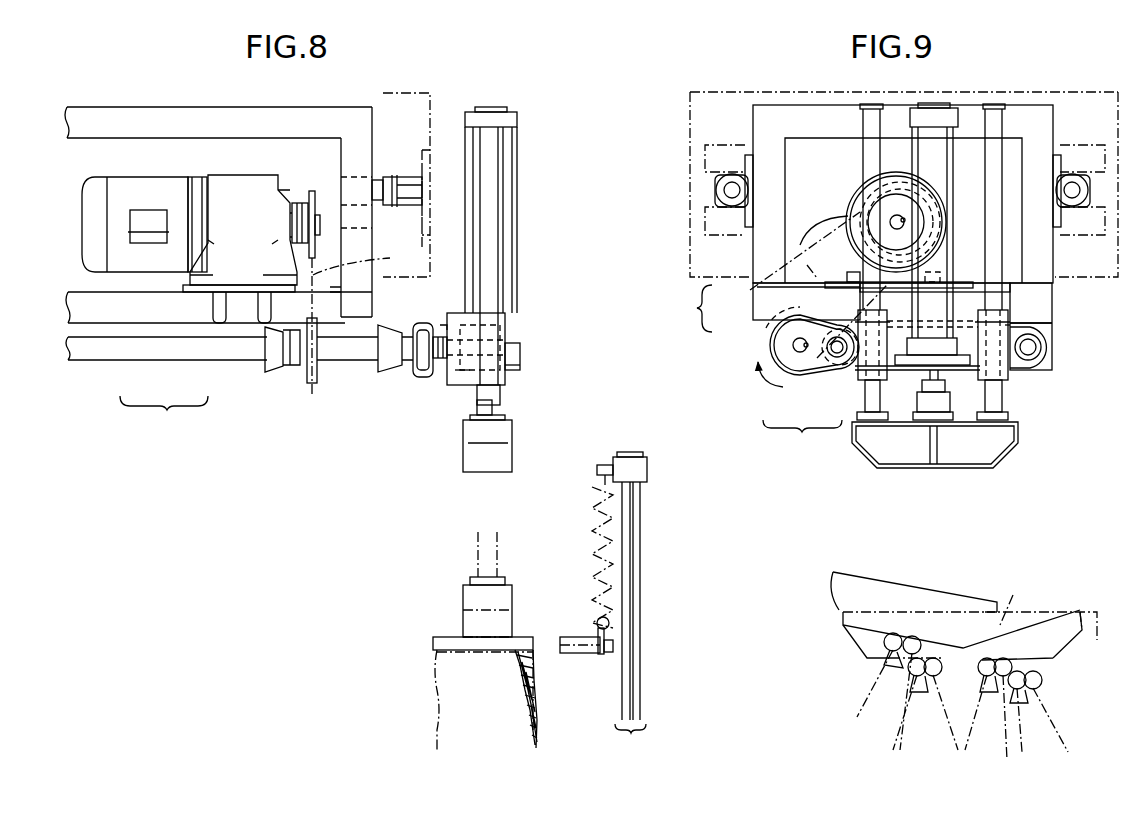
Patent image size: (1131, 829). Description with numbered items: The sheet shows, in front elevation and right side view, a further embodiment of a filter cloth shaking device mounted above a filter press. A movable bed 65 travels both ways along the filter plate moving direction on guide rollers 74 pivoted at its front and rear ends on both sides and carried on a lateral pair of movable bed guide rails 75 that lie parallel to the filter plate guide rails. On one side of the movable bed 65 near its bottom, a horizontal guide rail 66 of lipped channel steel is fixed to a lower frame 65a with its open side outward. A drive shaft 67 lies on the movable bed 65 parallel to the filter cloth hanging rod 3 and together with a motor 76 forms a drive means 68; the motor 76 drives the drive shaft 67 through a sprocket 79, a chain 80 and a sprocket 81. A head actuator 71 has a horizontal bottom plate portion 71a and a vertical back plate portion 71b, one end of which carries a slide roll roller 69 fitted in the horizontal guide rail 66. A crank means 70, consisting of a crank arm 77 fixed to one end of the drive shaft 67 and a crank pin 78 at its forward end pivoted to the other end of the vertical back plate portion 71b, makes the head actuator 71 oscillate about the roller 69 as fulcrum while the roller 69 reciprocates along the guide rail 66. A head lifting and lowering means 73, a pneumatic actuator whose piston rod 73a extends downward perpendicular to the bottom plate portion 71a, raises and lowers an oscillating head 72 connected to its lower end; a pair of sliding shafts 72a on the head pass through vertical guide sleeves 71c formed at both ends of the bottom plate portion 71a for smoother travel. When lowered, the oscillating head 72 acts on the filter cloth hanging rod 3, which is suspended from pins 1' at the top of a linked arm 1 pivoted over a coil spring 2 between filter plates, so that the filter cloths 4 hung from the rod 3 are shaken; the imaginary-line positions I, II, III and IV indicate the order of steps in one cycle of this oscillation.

In FIG. 8, the movable bed 65 is at (166, 110).
In FIG. 9, the movable bed 65 is at (797, 103).
In FIG. 9, the lower frame 65a is at (1052, 298).
In FIG. 8, the horizontal guide rail 66 is at (418, 380).
In FIG. 9, the horizontal guide rail 66 is at (1050, 347).
In FIG. 8, the drive shaft 67 is at (187, 352).
In FIG. 9, the drive shaft 67 is at (793, 343).
In FIG. 8, the drive means 68 is at (164, 416).
In FIG. 9, the drive means 68 is at (686, 308).
In FIG. 9, the slide roll roller 69 is at (1050, 370).
In FIG. 9, the crank means 70 is at (802, 444).
In FIG. 8, the head actuator 71 is at (521, 345).
In FIG. 9, the head actuator 71 is at (960, 378).
In FIG. 8, the horizontal bottom plate portion 71a is at (463, 378).
In FIG. 9, the horizontal bottom plate portion 71a is at (903, 368).
In FIG. 8, the vertical back plate portion 71b is at (442, 327).
In FIG. 9, the vertical back plate portion 71b is at (965, 330).
In FIG. 9, the vertical guide sleeves 71c is at (870, 317).
In FIG. 8, the oscillating head 72 is at (468, 432).
In FIG. 9, the oscillating head 72 is at (1022, 433).
In FIG. 8, the sliding shafts 72a is at (490, 392).
In FIG. 9, the sliding shafts 72a is at (873, 403).
In FIG. 8, the head lifting and lowering means 73 is at (512, 182).
In FIG. 9, the head lifting and lowering means 73 is at (938, 140).
In FIG. 9, the piston rod 73a is at (943, 378).
In FIG. 8, the guide rollers 74 is at (405, 205).
In FIG. 9, the guide rollers 74 is at (728, 205).
In FIG. 8, the movable bed guide rails 75 is at (420, 165).
In FIG. 9, the movable bed guide rails 75 is at (728, 150).
In FIG. 8, the motor 76 is at (137, 262).
In FIG. 9, the motor 76 is at (750, 290).
In FIG. 9, the crank arm 77 is at (797, 358).
In FIG. 9, the crank pin 78 is at (838, 357).
In FIG. 8, the sprocket 79 is at (314, 192).
In FIG. 9, the sprocket 79 is at (887, 203).
In FIG. 8, the chain 80 is at (364, 258).
In FIG. 9, the chain 80 is at (821, 247).
In FIG. 8, the sprocket 81 is at (318, 372).
In FIG. 9, the sprocket 81 is at (760, 366).
In FIG. 8, the linked arm 1 is at (630, 607).
In FIG. 8, the pins 1' is at (593, 456).
In FIG. 8, the coil spring 2 is at (590, 510).
In FIG. 8, the filter cloth hanging rod 3 is at (581, 638).
In FIG. 9, the filter cloth hanging rod 3 is at (885, 642).
In FIG. 8, the filter cloths 4 is at (535, 728).
In FIG. 9, the filter cloths 4 is at (866, 703).
In FIG. 9, the oscillation step I is at (1016, 590).
In FIG. 9, the oscillation step II is at (1040, 610).
In FIG. 9, the oscillation step III is at (840, 625).
In FIG. 9, the oscillation step IV is at (850, 570).